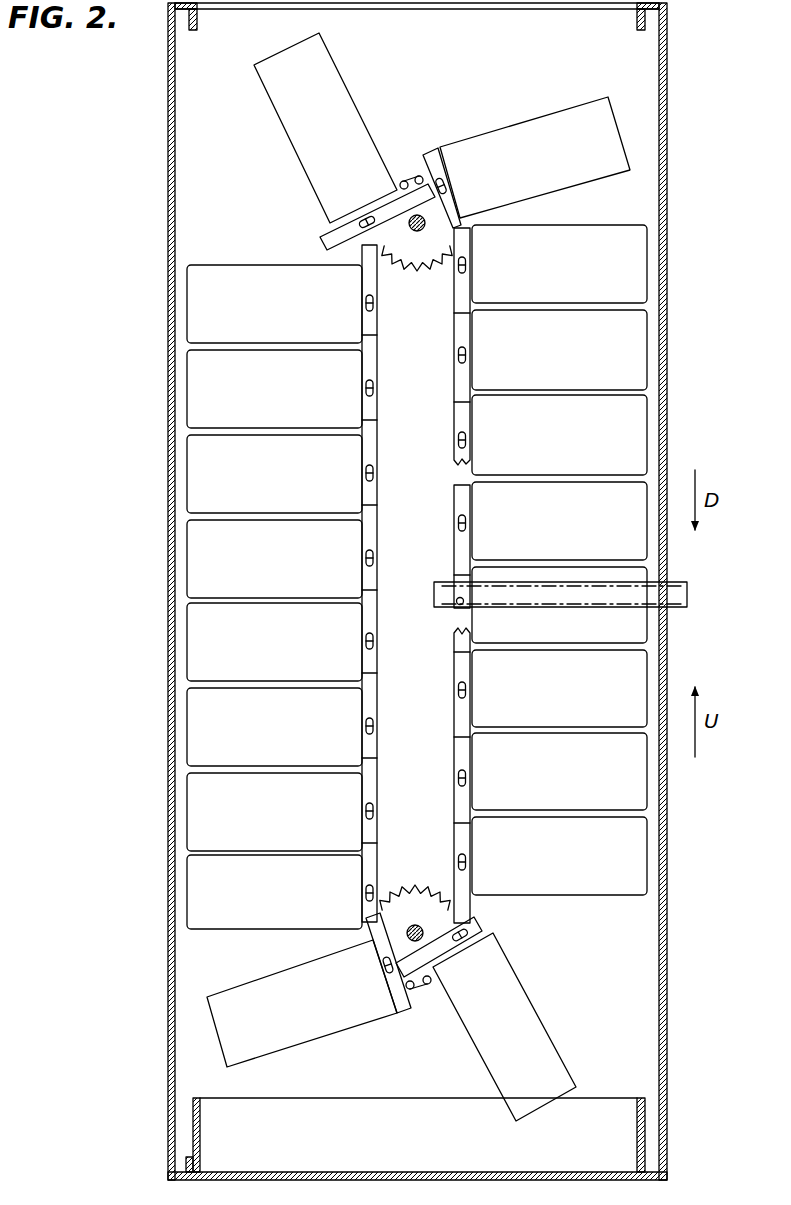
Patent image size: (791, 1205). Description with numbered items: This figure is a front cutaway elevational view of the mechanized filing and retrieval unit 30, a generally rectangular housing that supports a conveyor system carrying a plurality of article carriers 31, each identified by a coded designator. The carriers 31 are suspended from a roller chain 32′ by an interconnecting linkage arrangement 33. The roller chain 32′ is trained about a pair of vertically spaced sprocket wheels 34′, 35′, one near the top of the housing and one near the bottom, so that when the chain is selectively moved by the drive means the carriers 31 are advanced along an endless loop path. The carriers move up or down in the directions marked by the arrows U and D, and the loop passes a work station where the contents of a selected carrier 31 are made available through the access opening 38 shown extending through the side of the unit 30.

The mechanized filing and retrieval unit 30 is at (160, 133).
The article carriers 31 is at (192, 303).
The interconnecting linkage arrangement 33 is at (428, 152).
The sprocket wheel 34′ is at (420, 276).
The sprocket wheel 35′ is at (407, 905).
The roller chain 32′ is at (418, 990).
The access opening 38 is at (690, 604).